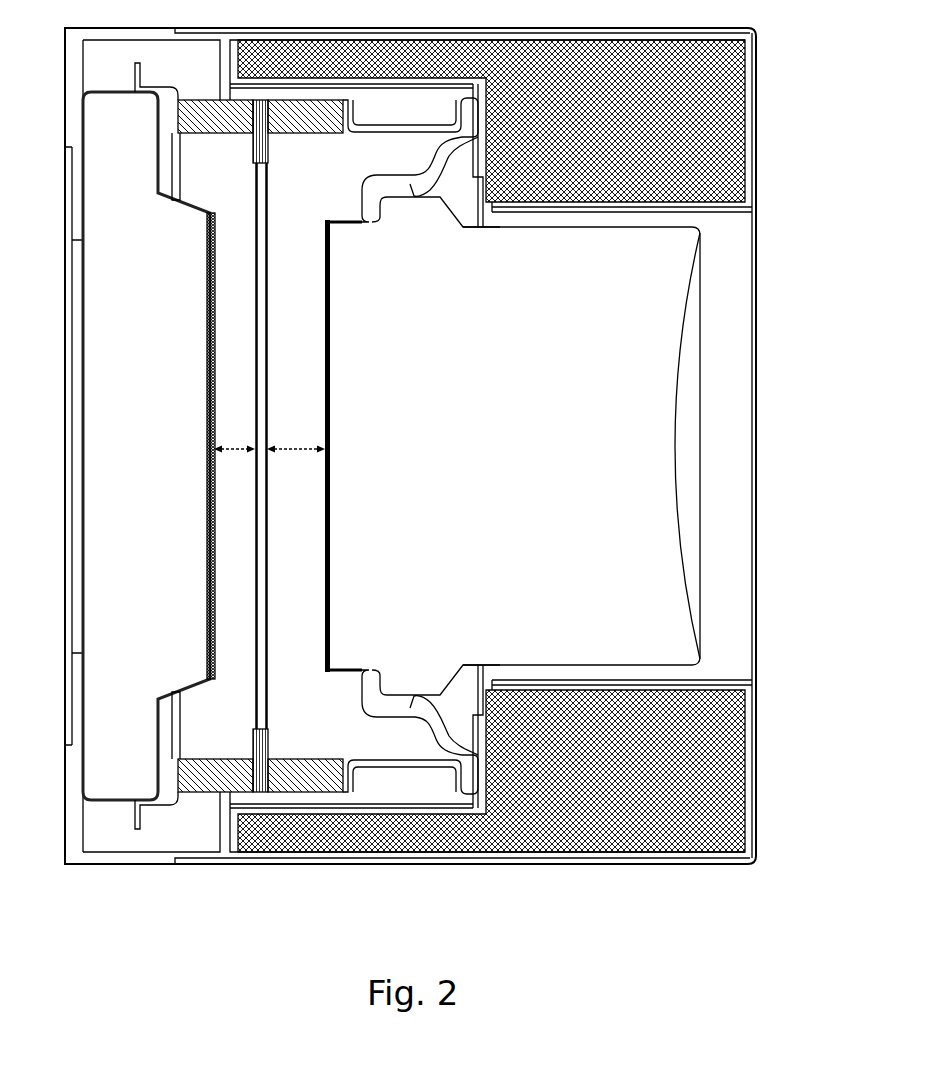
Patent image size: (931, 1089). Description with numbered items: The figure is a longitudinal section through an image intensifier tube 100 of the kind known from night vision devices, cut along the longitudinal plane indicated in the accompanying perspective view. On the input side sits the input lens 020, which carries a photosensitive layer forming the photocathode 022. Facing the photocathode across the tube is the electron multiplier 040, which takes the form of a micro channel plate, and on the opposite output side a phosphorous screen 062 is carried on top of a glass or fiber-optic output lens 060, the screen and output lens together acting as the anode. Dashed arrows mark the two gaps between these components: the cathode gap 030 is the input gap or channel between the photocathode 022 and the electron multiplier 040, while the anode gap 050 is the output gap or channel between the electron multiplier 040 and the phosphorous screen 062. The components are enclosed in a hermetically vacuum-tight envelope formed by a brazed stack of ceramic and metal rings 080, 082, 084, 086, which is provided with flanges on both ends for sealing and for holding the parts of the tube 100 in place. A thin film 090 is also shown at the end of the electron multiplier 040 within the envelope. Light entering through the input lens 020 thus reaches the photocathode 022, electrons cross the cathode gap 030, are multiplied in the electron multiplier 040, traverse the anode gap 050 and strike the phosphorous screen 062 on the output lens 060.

The image intensifier tube 100 is at (90, 850).
The input lens 020 is at (158, 455).
The photocathode 022 is at (207, 535).
The cathode gap 030 is at (236, 449).
The electron multiplier 040 is at (258, 568).
The anode gap 050 is at (300, 449).
The fiber-optic output lens 060 is at (537, 455).
The phosphorous screen 062 is at (332, 356).
The brazed stack of ceramic and metal rings 080 is at (172, 121).
The brazed stack of ceramic and metal rings 082 is at (280, 126).
The brazed stack of ceramic and metal rings 084 is at (357, 128).
The brazed stack of ceramic and metal rings 086 is at (363, 689).
The thin film 090 is at (258, 750).